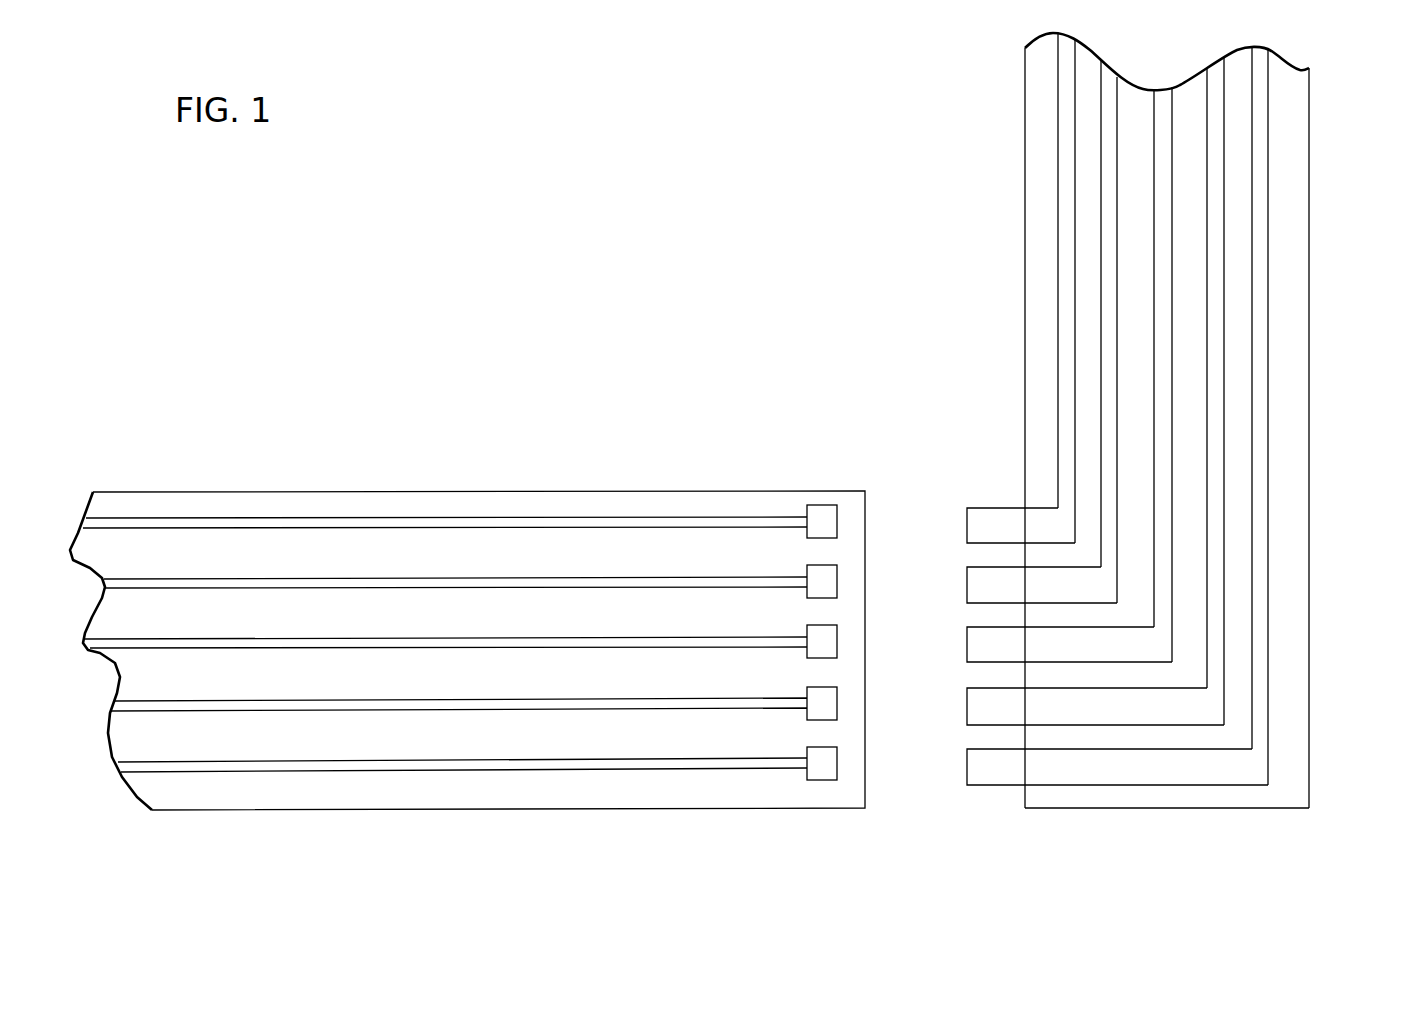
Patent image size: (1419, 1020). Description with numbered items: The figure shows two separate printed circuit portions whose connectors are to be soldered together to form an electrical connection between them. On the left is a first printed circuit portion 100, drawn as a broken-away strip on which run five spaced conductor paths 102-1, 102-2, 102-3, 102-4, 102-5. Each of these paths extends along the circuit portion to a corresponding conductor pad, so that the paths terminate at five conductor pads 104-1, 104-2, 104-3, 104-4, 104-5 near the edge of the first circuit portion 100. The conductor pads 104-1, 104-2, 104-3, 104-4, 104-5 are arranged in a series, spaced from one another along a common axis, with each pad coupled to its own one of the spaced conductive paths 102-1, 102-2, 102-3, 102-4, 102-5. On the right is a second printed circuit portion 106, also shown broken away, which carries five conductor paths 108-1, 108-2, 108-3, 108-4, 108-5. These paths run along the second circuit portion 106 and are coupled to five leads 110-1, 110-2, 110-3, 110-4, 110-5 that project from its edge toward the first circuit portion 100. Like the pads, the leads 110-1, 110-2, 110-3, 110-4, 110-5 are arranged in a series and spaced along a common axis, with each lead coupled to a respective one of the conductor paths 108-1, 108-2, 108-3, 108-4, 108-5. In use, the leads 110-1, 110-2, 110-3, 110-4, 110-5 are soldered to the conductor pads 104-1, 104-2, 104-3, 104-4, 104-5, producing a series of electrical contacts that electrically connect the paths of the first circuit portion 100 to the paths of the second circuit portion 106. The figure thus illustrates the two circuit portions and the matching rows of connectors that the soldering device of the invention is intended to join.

The first printed circuit portion 100 is at (520, 488).
The conductor path 102-1 is at (237, 516).
The conductor path 102-2 is at (261, 577).
The conductor path 102-3 is at (298, 637).
The conductor path 102-4 is at (312, 712).
The conductor path 102-5 is at (260, 773).
The conductor pad 104-1 is at (805, 537).
The conductor pad 104-2 is at (805, 597).
The conductor pad 104-3 is at (805, 657).
The conductor pad 104-4 is at (805, 719).
The conductor pad 104-5 is at (805, 779).
The second printed circuit portion 106 is at (1321, 206).
The conductor path 108-1 is at (1065, 182).
The conductor path 108-2 is at (1107, 235).
The conductor path 108-3 is at (1162, 292).
The conductor path 108-4 is at (1215, 350).
The conductor path 108-5 is at (1258, 407).
The lead 110-1 is at (967, 525).
The lead 110-2 is at (967, 585).
The lead 110-3 is at (967, 645).
The lead 110-4 is at (967, 707).
The lead 110-5 is at (967, 767).